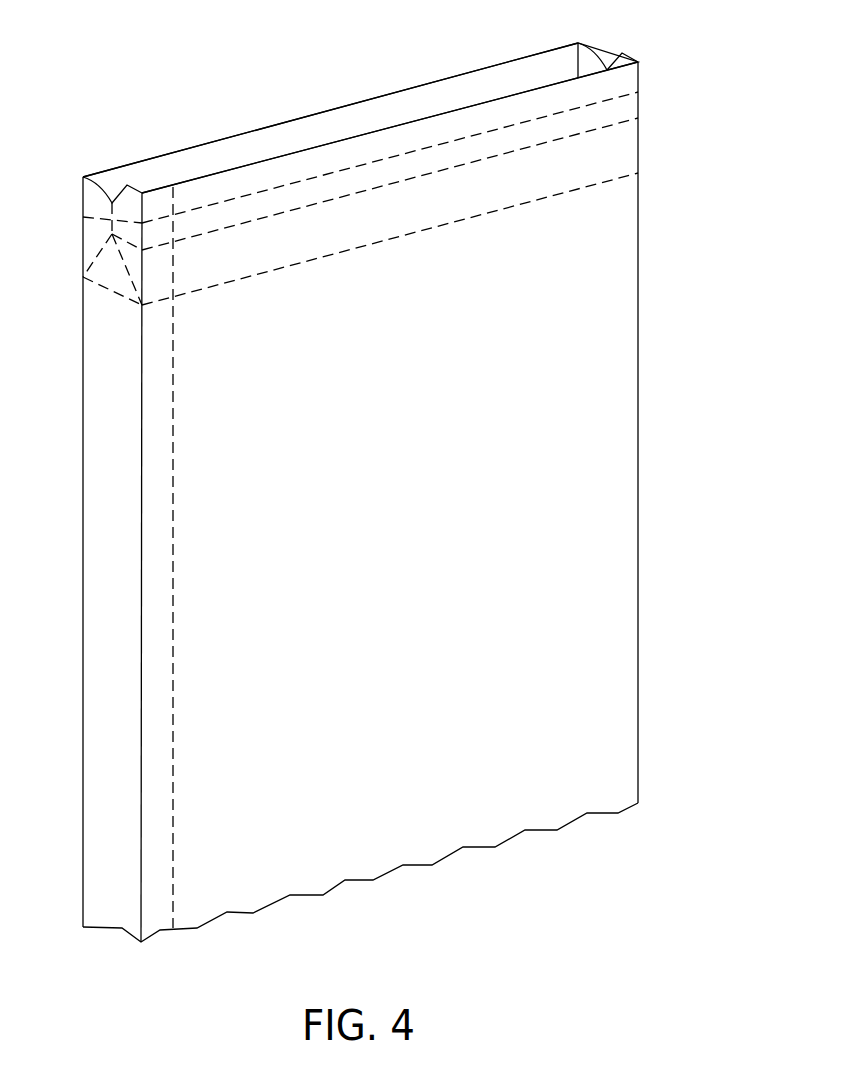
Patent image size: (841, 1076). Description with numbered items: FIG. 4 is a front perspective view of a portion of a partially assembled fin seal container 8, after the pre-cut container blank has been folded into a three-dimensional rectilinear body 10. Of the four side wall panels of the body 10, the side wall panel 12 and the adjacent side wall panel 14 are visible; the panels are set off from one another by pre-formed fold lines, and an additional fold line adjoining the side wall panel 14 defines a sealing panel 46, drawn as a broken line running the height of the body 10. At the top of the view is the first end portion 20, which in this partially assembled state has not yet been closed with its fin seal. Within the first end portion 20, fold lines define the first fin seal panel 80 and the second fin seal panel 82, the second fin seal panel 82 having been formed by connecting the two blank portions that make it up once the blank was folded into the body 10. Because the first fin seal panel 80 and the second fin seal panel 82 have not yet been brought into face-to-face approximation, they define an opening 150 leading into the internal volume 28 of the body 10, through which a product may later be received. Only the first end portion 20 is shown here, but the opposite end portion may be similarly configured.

The fin seal container 8 is at (116, 122).
The three-dimensional rectilinear body 10 is at (639, 331).
The side wall panel 12 is at (412, 568).
The side wall panel 14 is at (124, 609).
The first end portion 20 is at (639, 100).
The internal volume 28 is at (650, 233).
The sealing panel 46 is at (165, 475).
The first fin seal panel 80 is at (370, 177).
The second fin seal panel 82 is at (358, 117).
The opening 150 is at (520, 70).